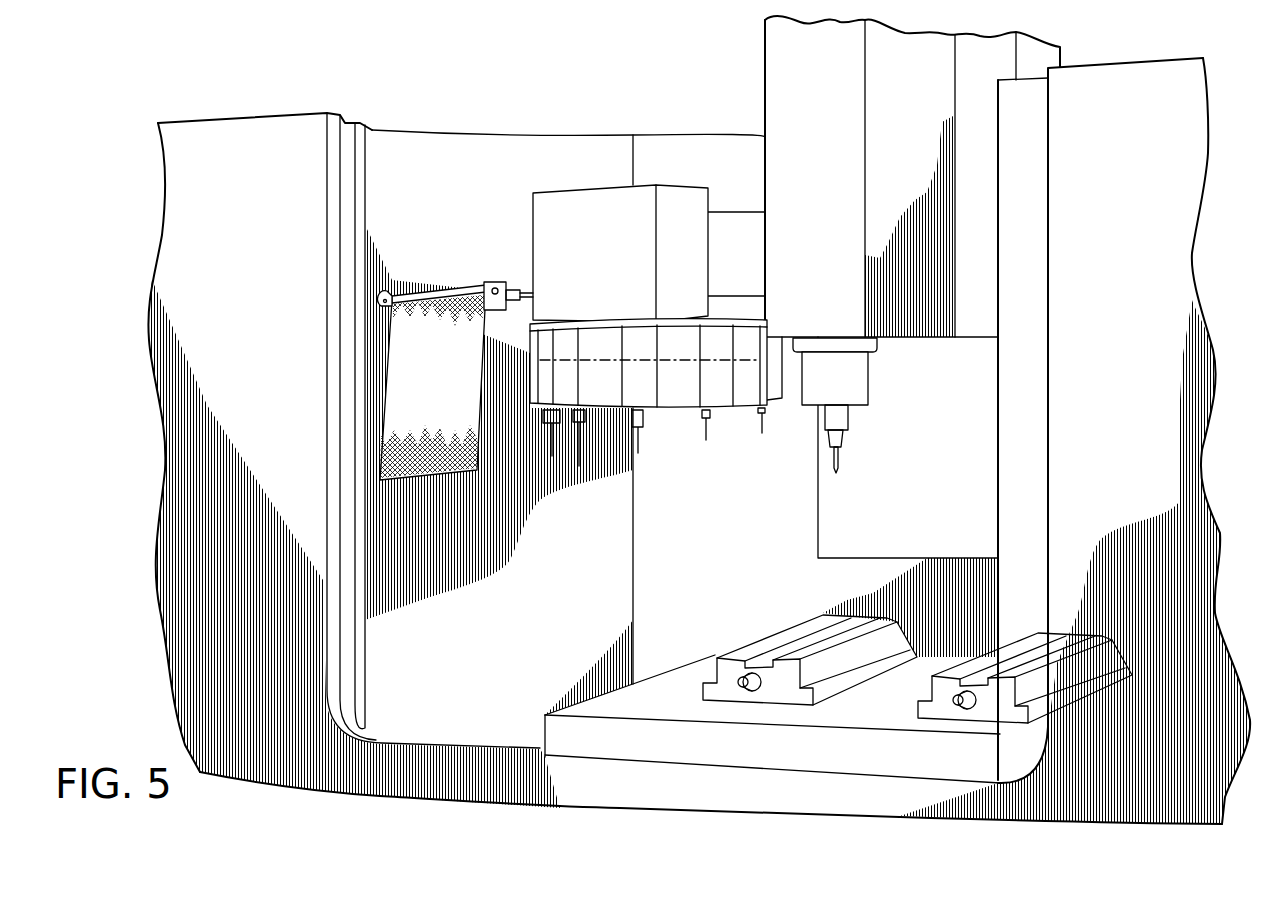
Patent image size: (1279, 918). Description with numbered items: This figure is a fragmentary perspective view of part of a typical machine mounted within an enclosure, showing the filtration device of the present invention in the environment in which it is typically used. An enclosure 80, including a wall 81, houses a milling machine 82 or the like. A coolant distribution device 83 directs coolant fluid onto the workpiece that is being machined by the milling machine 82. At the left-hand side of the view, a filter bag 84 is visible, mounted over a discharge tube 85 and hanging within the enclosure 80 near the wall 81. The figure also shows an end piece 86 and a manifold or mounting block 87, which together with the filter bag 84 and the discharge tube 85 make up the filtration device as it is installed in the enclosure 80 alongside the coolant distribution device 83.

The enclosure 80 is at (1180, 357).
The wall 81 is at (620, 552).
The milling machine 82 is at (855, 392).
The coolant distribution device 83 is at (722, 393).
The filter bag 84 is at (452, 474).
The discharge tube 85 is at (393, 296).
The end piece 86 is at (382, 290).
The manifold or mounting block 87 is at (502, 280).